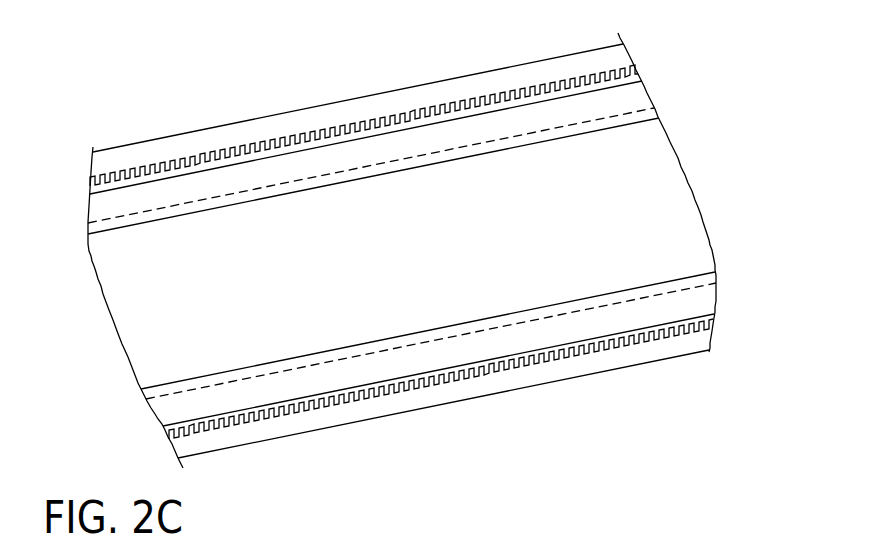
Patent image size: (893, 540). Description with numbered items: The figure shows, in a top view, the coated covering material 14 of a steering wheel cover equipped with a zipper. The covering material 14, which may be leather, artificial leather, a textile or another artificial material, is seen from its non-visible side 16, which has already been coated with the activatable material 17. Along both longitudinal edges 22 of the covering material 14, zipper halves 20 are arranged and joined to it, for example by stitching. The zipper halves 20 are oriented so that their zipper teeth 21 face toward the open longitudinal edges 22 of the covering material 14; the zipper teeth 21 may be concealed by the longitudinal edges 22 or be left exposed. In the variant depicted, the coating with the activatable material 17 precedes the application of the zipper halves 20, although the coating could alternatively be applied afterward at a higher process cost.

The covering material 14 is at (657, 65).
The non-visible side 16 is at (615, 324).
The activatable material 17 is at (663, 179).
The zipper halves 20 is at (273, 172).
The zipper teeth 21 is at (562, 358).
The longitudinal edges 22 is at (328, 118).